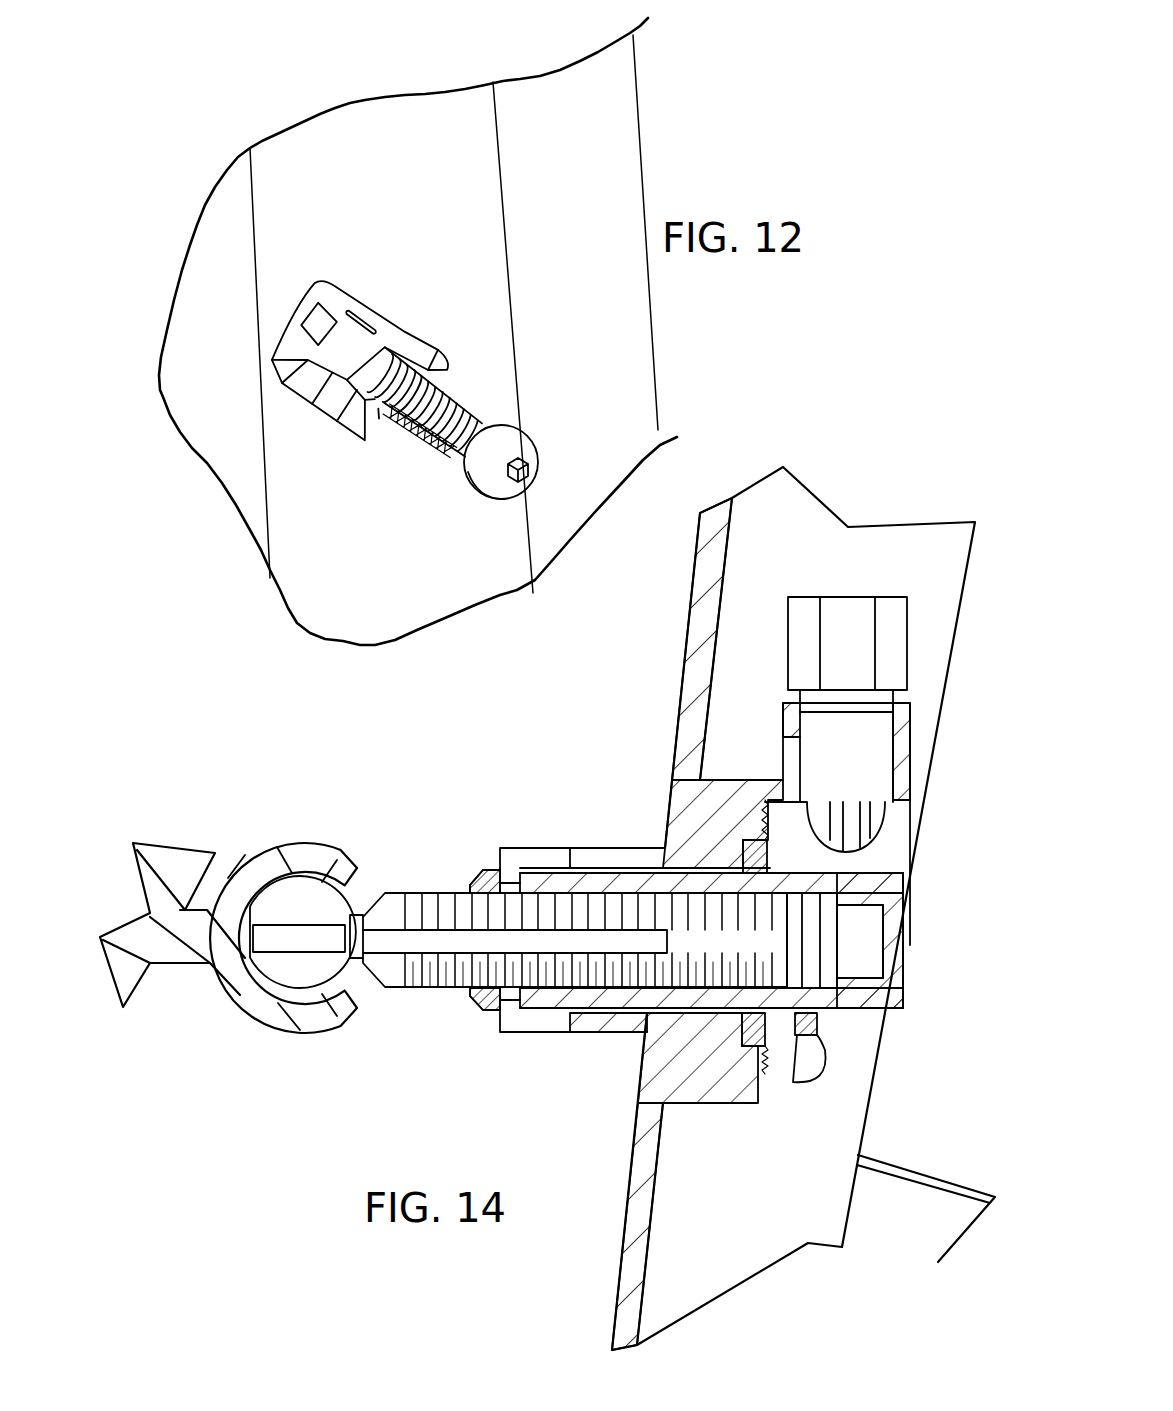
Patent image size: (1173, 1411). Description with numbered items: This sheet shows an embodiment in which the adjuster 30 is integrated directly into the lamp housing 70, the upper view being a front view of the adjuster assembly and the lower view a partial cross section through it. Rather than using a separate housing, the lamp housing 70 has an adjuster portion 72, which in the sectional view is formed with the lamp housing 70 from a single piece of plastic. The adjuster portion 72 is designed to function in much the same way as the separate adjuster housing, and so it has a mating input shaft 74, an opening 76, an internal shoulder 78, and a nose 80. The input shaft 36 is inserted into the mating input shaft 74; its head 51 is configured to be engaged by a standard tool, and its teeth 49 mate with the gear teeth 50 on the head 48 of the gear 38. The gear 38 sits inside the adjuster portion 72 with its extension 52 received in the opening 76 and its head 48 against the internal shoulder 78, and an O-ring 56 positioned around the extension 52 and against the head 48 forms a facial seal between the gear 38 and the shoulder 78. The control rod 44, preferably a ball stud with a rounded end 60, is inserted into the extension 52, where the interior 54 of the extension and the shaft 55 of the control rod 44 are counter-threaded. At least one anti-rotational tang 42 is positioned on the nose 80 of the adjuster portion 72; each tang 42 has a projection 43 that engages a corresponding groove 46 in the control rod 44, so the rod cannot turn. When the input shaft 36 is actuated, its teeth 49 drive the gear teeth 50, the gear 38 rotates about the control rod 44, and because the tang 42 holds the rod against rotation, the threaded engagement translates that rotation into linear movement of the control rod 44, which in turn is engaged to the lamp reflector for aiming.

In FIG. 12, the adjuster 30 is at (745, 96).
In FIG. 14, the adjuster 30 is at (564, 908).
In FIG. 14, the input shaft 36 is at (850, 706).
In FIG. 14, the gear 38 is at (755, 940).
In FIG. 12, the anti-rotational tang 42 is at (343, 415).
In FIG. 12, the projection 43 is at (390, 428).
In FIG. 12, the control rod 44 is at (451, 417).
In FIG. 14, the control rod 44 is at (568, 932).
In FIG. 12, the groove 46 is at (435, 447).
In FIG. 14, the groove 46 is at (415, 950).
In FIG. 14, the gear head 48 is at (797, 1066).
In FIG. 14, the tooth of input shaft 49 is at (880, 831).
In FIG. 14, the gear tooth 50 is at (845, 1042).
In FIG. 14, the head of input shaft 51 is at (900, 634).
In FIG. 14, the extension 52 is at (545, 1002).
In FIG. 14, the interior of extension 54 is at (820, 925).
In FIG. 12, the shaft of control rod 55 is at (445, 386).
In FIG. 14, the shaft of control rod 55 is at (420, 980).
In FIG. 14, the O-ring 56 is at (752, 840).
In FIG. 12, the ball end 60 is at (530, 448).
In FIG. 14, the ball end 60 is at (305, 887).
In FIG. 14, the lamp housing 70 is at (693, 663).
In FIG. 12, the adjuster portion 72 is at (370, 297).
In FIG. 14, the adjuster portion 72 is at (633, 842).
In FIG. 14, the mating input shaft 74 is at (903, 753).
In FIG. 14, the opening 76 is at (617, 1022).
In FIG. 14, the internal shoulder 78 is at (750, 1098).
In FIG. 12, the nose 80 is at (335, 290).
In FIG. 14, the nose 80 is at (530, 846).